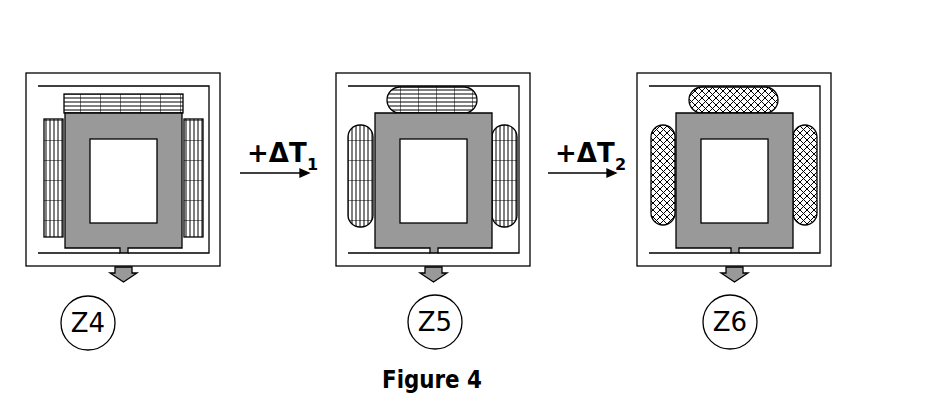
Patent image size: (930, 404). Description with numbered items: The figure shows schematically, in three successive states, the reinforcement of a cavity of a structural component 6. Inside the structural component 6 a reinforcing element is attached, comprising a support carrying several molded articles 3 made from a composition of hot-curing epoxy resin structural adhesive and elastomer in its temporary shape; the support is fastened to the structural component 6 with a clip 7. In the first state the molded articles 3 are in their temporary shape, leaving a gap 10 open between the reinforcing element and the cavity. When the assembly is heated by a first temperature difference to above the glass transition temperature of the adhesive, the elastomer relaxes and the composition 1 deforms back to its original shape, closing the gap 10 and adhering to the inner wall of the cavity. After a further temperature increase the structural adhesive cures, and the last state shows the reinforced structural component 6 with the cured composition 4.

The structural component 6 is at (53, 80).
The gap 10 is at (103, 92).
The molded article 3 is at (148, 100).
The composition in the original shape 1 is at (436, 66).
The cured composition 4 is at (740, 64).
The clip 7 is at (127, 276).